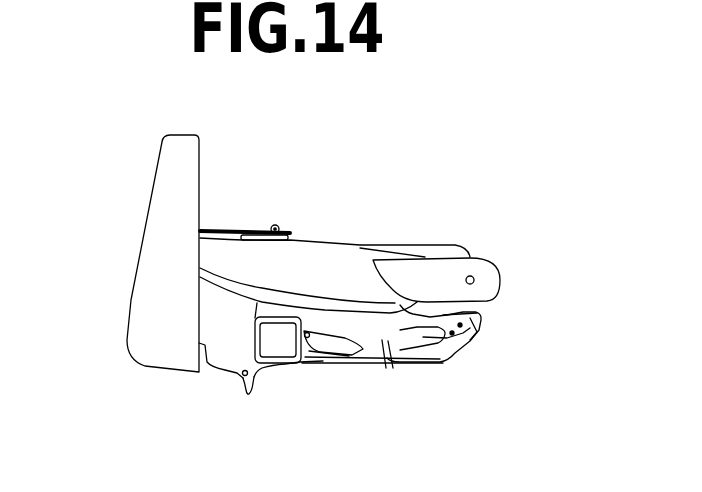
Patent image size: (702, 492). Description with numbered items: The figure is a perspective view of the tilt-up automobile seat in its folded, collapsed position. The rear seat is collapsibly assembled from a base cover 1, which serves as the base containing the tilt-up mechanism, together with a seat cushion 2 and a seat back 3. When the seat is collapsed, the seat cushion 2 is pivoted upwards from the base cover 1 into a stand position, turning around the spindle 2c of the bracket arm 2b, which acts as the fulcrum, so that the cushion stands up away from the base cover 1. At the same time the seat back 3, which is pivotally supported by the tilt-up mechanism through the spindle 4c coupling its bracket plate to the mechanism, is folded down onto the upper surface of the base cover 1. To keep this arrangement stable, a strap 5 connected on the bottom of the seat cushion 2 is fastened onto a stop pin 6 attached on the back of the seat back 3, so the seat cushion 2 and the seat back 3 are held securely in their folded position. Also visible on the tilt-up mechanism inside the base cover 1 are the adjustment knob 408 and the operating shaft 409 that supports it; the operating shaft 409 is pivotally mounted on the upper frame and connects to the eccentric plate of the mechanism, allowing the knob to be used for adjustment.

The base cover 1 is at (386, 367).
The seat cushion 2 is at (140, 233).
The bracket arm 2b is at (222, 376).
The spindle 2c is at (253, 391).
The seat back 3 is at (350, 231).
The spindle 4c is at (474, 276).
The strap 5 is at (226, 229).
The stop pin 6 is at (278, 225).
The adjustment knob 408 is at (345, 347).
The operating shaft 409 is at (318, 358).